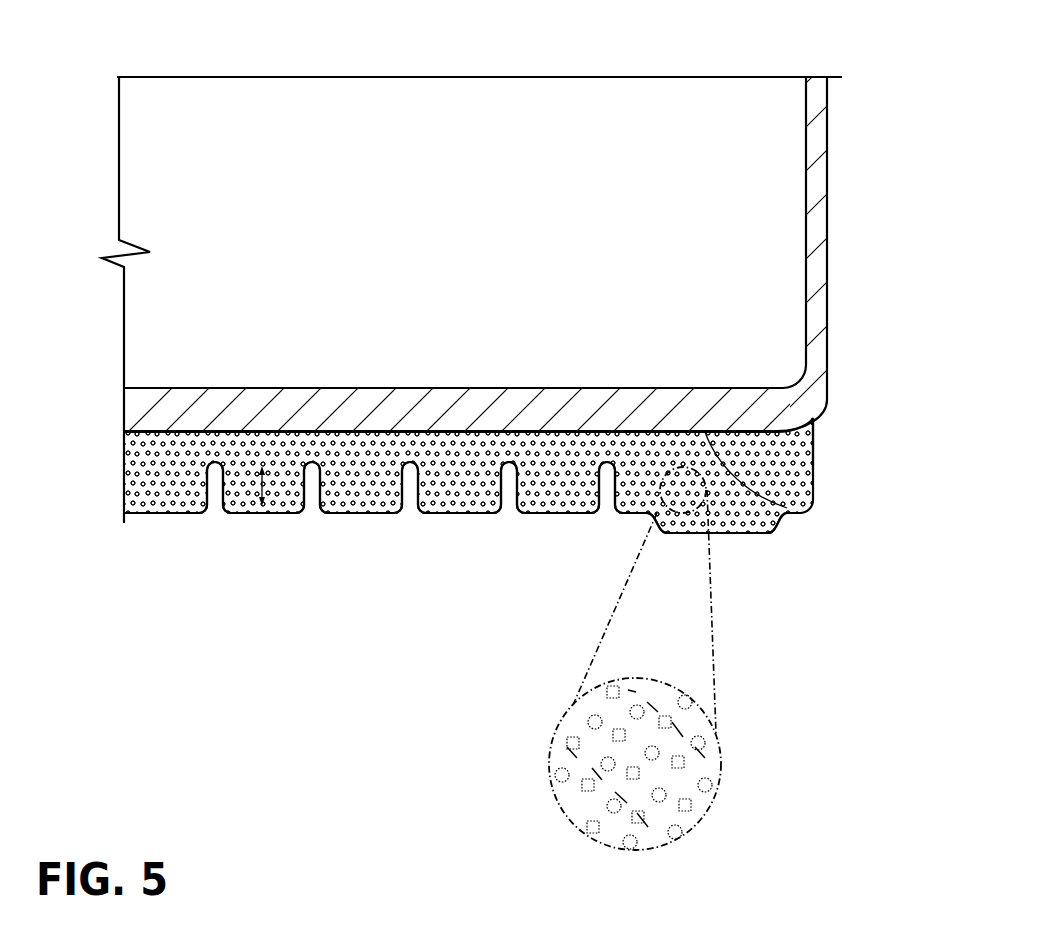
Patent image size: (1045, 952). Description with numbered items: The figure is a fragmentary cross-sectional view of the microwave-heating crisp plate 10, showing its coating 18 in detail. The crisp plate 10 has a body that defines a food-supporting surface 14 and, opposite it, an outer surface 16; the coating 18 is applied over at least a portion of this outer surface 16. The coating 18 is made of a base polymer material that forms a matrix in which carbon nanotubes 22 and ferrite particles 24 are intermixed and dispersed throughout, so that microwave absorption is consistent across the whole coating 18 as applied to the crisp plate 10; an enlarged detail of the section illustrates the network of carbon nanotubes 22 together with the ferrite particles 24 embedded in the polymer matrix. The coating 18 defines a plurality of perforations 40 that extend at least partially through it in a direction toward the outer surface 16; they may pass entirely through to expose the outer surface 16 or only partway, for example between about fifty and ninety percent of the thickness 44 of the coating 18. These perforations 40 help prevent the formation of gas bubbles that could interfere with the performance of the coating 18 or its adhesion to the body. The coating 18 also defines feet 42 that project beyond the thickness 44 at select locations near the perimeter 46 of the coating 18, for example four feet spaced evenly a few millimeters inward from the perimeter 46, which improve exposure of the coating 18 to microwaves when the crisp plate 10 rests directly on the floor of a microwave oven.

The microwave-heating crisp plate 10 is at (563, 327).
The food-supporting surface 14 is at (438, 387).
The outer surface 16 is at (797, 511).
The coating 18 is at (822, 478).
The carbon nanotubes 22 is at (612, 812).
The ferrite particles 24 is at (684, 763).
The perforations 40 is at (213, 480).
The feet 42 is at (762, 520).
The thickness 44 is at (258, 485).
The perimeter 46 is at (815, 440).